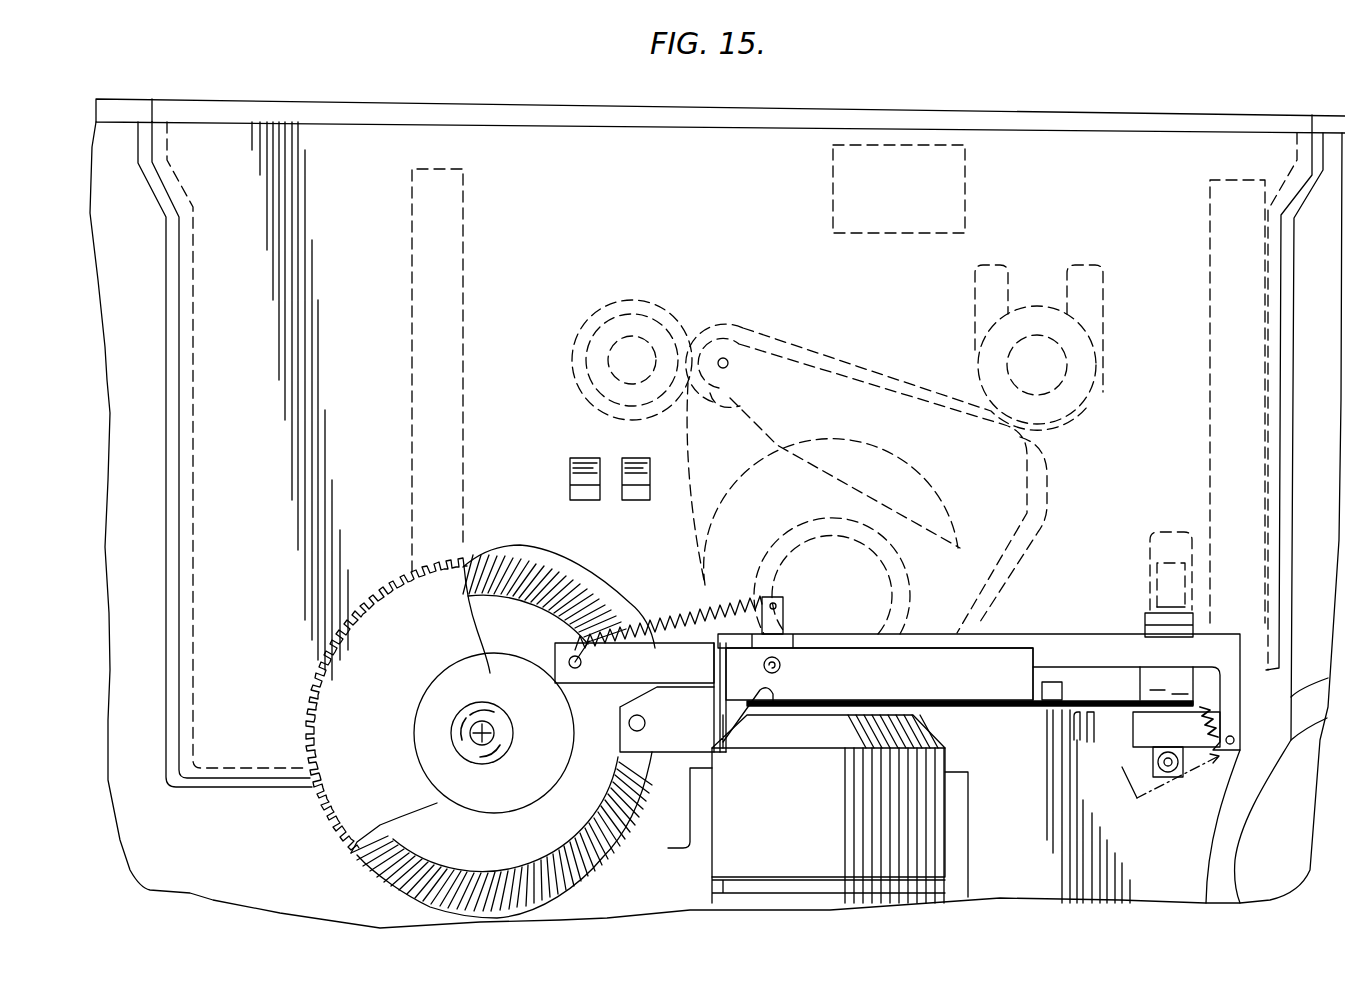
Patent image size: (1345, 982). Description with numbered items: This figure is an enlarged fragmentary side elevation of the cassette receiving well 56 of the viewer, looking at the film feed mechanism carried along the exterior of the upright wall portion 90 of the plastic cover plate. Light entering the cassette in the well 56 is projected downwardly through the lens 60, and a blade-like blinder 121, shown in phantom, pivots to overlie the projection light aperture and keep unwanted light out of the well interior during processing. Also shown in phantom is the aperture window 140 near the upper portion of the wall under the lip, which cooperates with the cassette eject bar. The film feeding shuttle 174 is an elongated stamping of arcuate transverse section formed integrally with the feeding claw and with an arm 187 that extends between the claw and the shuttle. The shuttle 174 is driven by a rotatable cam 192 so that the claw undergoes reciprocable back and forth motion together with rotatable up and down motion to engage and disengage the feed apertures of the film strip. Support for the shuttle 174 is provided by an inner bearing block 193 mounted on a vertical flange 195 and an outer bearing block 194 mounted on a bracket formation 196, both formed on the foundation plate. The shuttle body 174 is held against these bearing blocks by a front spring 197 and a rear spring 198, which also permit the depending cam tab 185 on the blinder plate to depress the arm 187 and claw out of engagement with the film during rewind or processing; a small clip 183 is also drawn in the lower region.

The cassette receiving well 56 is at (790, 108).
The lens 60 is at (830, 843).
The upright wall portion 90 is at (1273, 333).
The blinder 121 is at (852, 397).
The aperture window 140 is at (965, 200).
The film feeding shuttle 174 is at (1063, 647).
The clip 183 is at (1078, 740).
The cam tab 185 is at (984, 712).
The arm 187 is at (948, 706).
The rotatable cam 192 is at (468, 558).
The inner bearing block 193 is at (780, 638).
The outer bearing block 194 is at (1180, 628).
The vertical flange 195 is at (914, 686).
The bracket formation 196 is at (1158, 683).
The front spring 197 is at (1200, 727).
The rear spring 198 is at (645, 620).